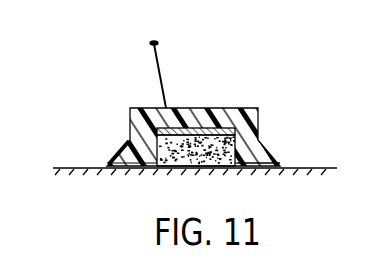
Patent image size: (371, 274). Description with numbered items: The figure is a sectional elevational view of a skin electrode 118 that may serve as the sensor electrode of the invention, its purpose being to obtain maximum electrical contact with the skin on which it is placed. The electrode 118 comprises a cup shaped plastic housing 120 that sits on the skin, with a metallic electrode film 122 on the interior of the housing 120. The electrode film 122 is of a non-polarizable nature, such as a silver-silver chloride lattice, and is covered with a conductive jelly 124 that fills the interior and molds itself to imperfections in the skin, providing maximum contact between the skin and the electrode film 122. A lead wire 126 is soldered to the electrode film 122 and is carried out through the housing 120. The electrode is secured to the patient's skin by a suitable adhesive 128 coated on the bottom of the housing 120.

The electrode 118 is at (213, 115).
The cup shaped plastic housing 120 is at (257, 118).
The metallic electrode film 122 is at (203, 128).
The conductive jelly 124 is at (223, 168).
The lead wire 126 is at (159, 68).
The adhesive 128 is at (282, 170).